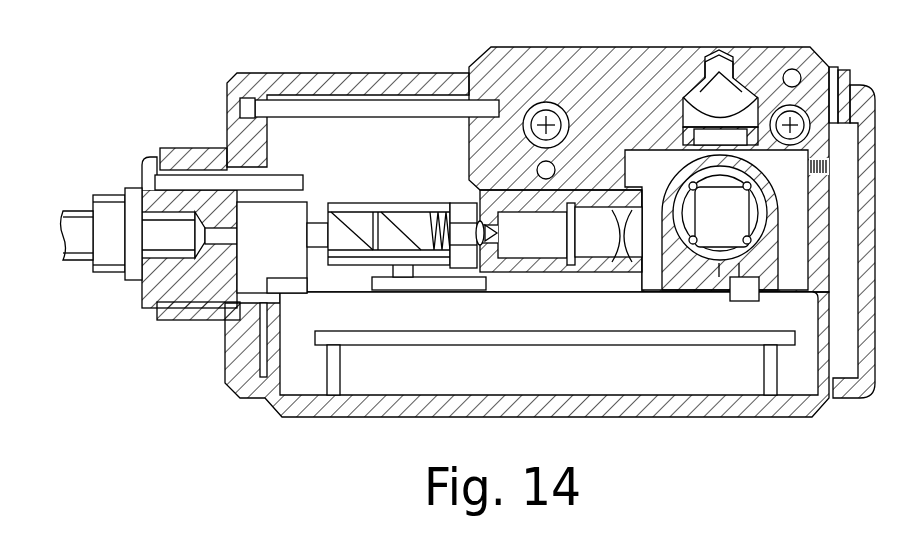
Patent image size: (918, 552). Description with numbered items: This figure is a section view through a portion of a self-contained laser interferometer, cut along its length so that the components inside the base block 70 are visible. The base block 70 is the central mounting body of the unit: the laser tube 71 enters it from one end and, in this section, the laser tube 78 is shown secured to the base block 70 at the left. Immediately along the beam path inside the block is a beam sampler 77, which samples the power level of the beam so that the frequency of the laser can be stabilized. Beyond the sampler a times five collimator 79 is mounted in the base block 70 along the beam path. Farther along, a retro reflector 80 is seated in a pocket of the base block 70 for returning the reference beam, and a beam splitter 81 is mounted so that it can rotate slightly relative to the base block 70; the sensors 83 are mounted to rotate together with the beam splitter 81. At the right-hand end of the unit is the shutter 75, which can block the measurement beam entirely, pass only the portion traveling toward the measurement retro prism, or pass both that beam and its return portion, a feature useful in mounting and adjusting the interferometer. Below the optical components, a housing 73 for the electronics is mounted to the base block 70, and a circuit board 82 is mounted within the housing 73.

The base block 70 is at (540, 58).
The laser tube 71 is at (70, 211).
The housing 73 is at (389, 418).
The shutter 75 is at (846, 68).
The beam sampler 77 is at (405, 228).
The laser tube 78 is at (140, 297).
The times five collimator 79 is at (510, 266).
The retro reflector 80 is at (700, 92).
The beam splitter 81 is at (735, 229).
The circuit board 82 is at (717, 358).
The sensors 83 is at (732, 304).